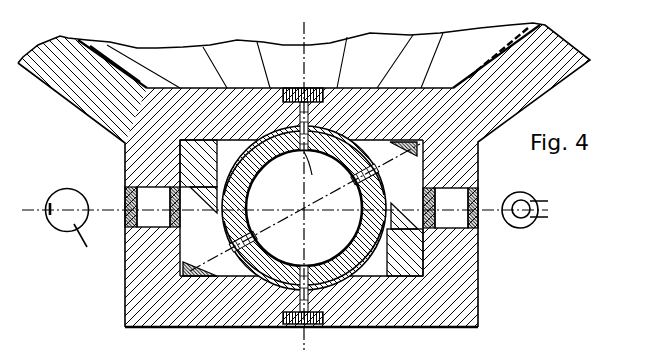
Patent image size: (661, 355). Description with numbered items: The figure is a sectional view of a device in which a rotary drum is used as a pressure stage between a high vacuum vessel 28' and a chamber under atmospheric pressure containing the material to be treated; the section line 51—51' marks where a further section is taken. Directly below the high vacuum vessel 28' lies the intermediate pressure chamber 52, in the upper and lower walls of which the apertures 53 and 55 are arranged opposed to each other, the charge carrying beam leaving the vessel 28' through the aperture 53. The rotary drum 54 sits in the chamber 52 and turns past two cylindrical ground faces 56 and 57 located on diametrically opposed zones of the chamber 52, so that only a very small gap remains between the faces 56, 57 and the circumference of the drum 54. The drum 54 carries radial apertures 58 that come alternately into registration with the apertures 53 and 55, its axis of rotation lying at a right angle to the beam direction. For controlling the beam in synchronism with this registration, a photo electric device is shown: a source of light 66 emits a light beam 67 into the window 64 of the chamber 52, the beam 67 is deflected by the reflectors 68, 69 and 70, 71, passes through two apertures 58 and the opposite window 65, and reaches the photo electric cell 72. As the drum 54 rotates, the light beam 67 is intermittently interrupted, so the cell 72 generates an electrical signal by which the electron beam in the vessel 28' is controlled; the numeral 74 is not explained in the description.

The high vacuum vessel 28' is at (275, 45).
The section line 51 is at (317, 105).
The section line 51' is at (327, 281).
The intermediate pressure chamber 52 is at (462, 160).
The aperture 53 is at (311, 87).
The rotary drum 54 is at (247, 200).
The aperture 55 is at (293, 325).
The cylindrical ground face 56 is at (323, 125).
The cylindrical ground face 57 is at (327, 288).
The radial aperture 58 is at (305, 268).
The window 64 is at (478, 226).
The window 65 is at (127, 224).
The source of light 66 is at (518, 201).
The light beam 67 is at (485, 207).
The reflector 68 is at (405, 239).
The reflector 69 is at (420, 134).
The reflector 70 is at (197, 276).
The reflector 71 is at (201, 219).
The photo electric cell 72 is at (68, 192).
The base 74 is at (301, 341).